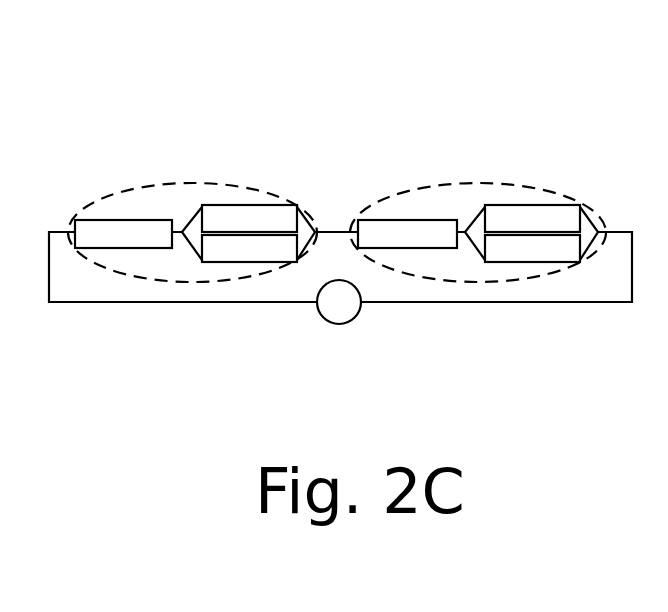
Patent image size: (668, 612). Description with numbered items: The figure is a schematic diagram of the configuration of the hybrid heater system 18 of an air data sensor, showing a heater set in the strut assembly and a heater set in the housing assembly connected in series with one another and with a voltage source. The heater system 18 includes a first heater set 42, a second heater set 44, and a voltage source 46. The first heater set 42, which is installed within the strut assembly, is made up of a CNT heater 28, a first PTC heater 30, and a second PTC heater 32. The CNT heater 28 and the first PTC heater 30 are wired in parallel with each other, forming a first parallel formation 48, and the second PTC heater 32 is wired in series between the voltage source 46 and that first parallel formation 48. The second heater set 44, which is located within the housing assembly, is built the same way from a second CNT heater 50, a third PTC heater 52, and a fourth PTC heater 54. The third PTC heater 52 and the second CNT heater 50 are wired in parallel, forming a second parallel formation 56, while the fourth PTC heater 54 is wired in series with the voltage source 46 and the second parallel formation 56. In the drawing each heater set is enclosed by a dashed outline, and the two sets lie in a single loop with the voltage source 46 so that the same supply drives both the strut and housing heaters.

The heater system 18 is at (384, 139).
The CNT heater 28 is at (249, 218).
The first PTC heater 30 is at (249, 248).
The second PTC heater 32 is at (123, 234).
The first heater set 42 is at (183, 182).
The second heater set 44 is at (525, 184).
The voltage source 46 is at (347, 320).
The first parallel formation 48 is at (312, 216).
The second CNT heater 50 is at (532, 218).
The third PTC heater 52 is at (532, 248).
The fourth PTC heater 54 is at (407, 234).
The second parallel formation 56 is at (588, 220).